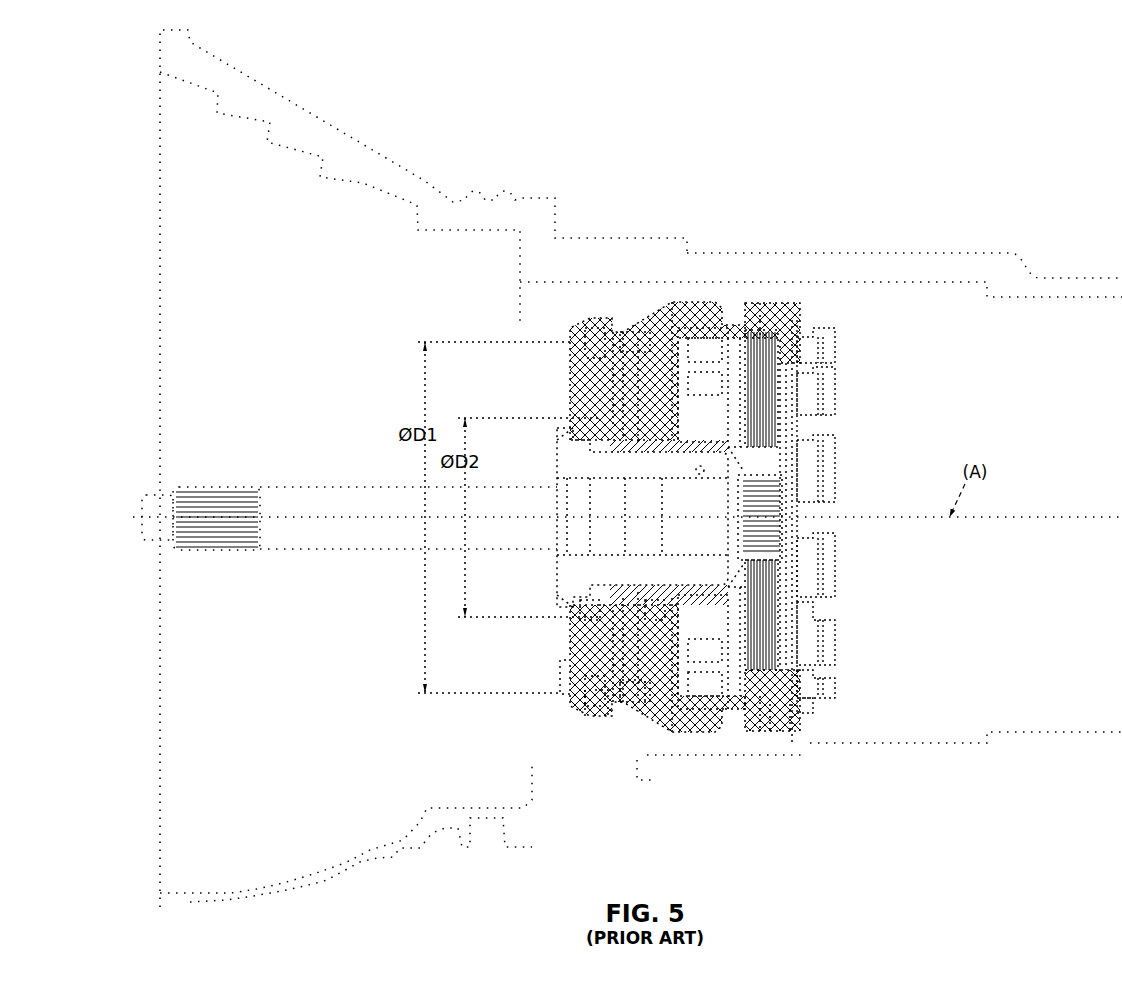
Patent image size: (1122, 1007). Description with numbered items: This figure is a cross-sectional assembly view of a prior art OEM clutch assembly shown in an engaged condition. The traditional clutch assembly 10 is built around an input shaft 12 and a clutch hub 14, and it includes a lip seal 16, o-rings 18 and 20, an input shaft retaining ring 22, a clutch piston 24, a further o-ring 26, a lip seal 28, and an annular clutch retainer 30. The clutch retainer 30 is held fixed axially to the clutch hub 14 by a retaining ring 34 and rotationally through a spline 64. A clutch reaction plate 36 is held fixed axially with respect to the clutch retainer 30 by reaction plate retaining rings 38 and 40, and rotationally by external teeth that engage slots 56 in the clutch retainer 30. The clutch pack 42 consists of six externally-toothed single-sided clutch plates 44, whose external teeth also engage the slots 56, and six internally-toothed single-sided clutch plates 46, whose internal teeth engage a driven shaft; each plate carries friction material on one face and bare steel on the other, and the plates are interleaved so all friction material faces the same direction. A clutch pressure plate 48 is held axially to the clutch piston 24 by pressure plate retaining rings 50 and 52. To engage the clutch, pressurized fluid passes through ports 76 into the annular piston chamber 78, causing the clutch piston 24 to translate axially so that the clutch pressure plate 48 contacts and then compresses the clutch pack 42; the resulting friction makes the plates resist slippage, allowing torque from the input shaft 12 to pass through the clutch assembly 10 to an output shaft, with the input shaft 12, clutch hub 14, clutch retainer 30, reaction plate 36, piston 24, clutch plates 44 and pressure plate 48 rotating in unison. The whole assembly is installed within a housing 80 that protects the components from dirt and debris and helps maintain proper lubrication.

The traditional clutch assembly 10 is at (363, 396).
The input shaft 12 is at (360, 490).
The clutch hub 14 is at (600, 707).
The lip seal 16 is at (632, 705).
The o-ring 18 is at (567, 693).
The o-ring 20 is at (650, 713).
The input shaft retaining ring 22 is at (778, 474).
The clutch piston 24 is at (651, 312).
The o-ring 26 is at (595, 410).
The lip seal 28 is at (657, 713).
The annular clutch retainer 30 is at (612, 326).
The retaining ring 34 is at (641, 322).
The clutch reaction plate 36 is at (733, 320).
The reaction plate retaining ring 38 is at (732, 310).
The reaction plate retaining ring 40 is at (739, 320).
The clutch pack 42 is at (775, 725).
The externally-toothed single-sided clutch plate 44 is at (776, 725).
The internally-toothed single-sided clutch plate 46 is at (792, 725).
The clutch pressure plate 48 is at (786, 302).
The pressure plate retaining ring 50 is at (773, 300).
The pressure plate retaining ring 52 is at (801, 305).
The slots 56 is at (818, 513).
The spline 64 is at (620, 710).
The ports 76 is at (645, 582).
The annular piston chamber 78 is at (566, 348).
The housing 80 is at (972, 256).